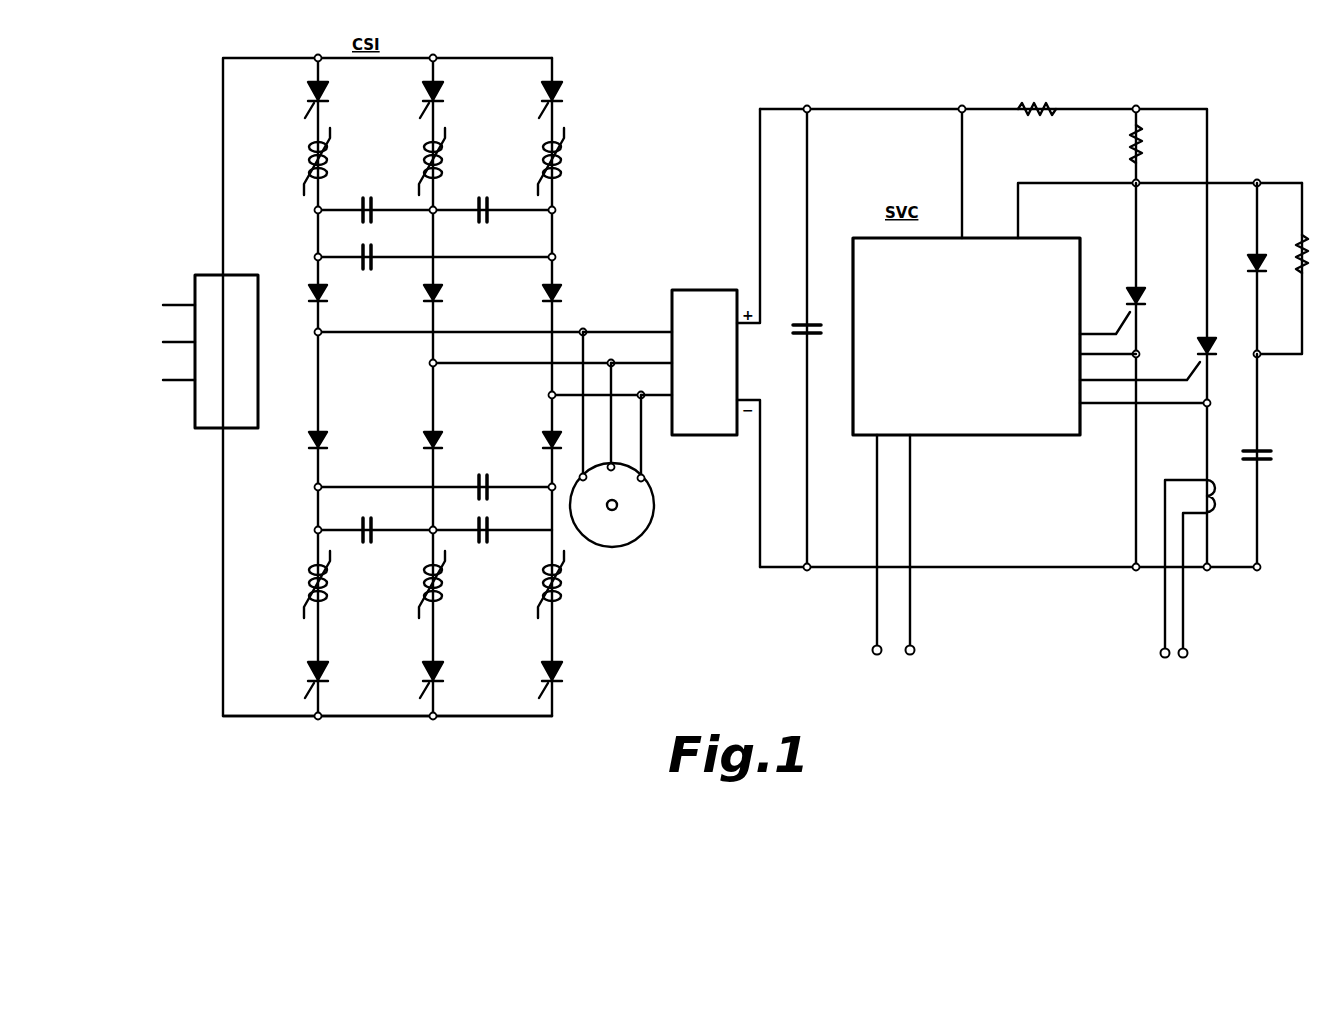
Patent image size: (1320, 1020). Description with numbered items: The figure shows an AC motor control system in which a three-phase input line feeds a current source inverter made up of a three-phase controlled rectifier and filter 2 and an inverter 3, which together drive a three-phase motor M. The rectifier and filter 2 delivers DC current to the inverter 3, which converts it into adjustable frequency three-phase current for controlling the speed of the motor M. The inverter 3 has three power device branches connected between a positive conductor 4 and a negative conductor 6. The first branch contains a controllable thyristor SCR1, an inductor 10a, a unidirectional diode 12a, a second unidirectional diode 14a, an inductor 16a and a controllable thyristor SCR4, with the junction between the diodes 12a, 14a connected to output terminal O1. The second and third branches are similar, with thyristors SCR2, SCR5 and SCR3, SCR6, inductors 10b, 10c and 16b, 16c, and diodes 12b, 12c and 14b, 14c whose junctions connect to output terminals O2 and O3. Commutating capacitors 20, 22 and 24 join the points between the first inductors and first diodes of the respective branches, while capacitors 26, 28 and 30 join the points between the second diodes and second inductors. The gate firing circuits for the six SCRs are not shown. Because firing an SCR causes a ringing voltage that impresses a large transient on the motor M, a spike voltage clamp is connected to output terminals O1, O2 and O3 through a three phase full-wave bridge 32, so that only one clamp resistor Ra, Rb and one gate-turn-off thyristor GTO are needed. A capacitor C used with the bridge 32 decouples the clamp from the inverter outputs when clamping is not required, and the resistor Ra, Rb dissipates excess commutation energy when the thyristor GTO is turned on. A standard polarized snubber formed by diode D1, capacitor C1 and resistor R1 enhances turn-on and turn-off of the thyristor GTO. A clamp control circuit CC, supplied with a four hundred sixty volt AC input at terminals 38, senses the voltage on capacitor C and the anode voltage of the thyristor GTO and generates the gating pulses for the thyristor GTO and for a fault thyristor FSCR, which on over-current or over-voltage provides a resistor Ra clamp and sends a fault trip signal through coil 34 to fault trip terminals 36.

The three-phase controlled rectifier and filter 2 is at (198, 275).
The inverter 3 is at (371, 365).
The positive conductor 4 is at (265, 56).
The negative conductor 6 is at (280, 718).
The controllable thyristor SCR1 is at (306, 92).
The controllable thyristor SCR2 is at (419, 92).
The controllable thyristor SCR3 is at (538, 92).
The controllable thyristor SCR4 is at (304, 672).
The controllable thyristor SCR5 is at (419, 672).
The controllable thyristor SCR6 is at (538, 672).
The inductor 10a is at (306, 160).
The inductor 10b is at (421, 160).
The inductor 10c is at (538, 160).
The unidirectional diode 12a is at (308, 300).
The unidirectional diode 12b is at (424, 299).
The unidirectional diode 12c is at (543, 299).
The unidirectional diode 14a is at (309, 441).
The unidirectional diode 14b is at (416, 446).
The unidirectional diode 14c is at (538, 436).
The inductor 16a is at (310, 574).
The inductor 16b is at (417, 581).
The inductor 16c is at (535, 581).
The capacitor 20 is at (375, 180).
The capacitor 22 is at (490, 180).
The capacitor 24 is at (373, 252).
The capacitor 26 is at (373, 520).
The capacitor 28 is at (490, 520).
The capacitor 30 is at (484, 478).
The output terminal O1 is at (583, 330).
The output terminal O2 is at (612, 362).
The output terminal O3 is at (636, 376).
The three-phase motor M is at (640, 532).
The three phase full-wave bridge 32 is at (708, 291).
The capacitor C is at (794, 326).
The resistor Ra is at (1034, 102).
The resistor Rb is at (1126, 150).
The clamp control circuit CC is at (1005, 438).
The gate-turn-off thyristor GTO is at (1148, 294).
The fault thyristor FSCR is at (1216, 338).
The diode D1 is at (1248, 262).
The resistor R1 is at (1294, 282).
The capacitor C1 is at (1248, 450).
The coil 34 is at (1217, 495).
The fault trip terminals 36 is at (1170, 648).
The terminals 38 is at (880, 645).